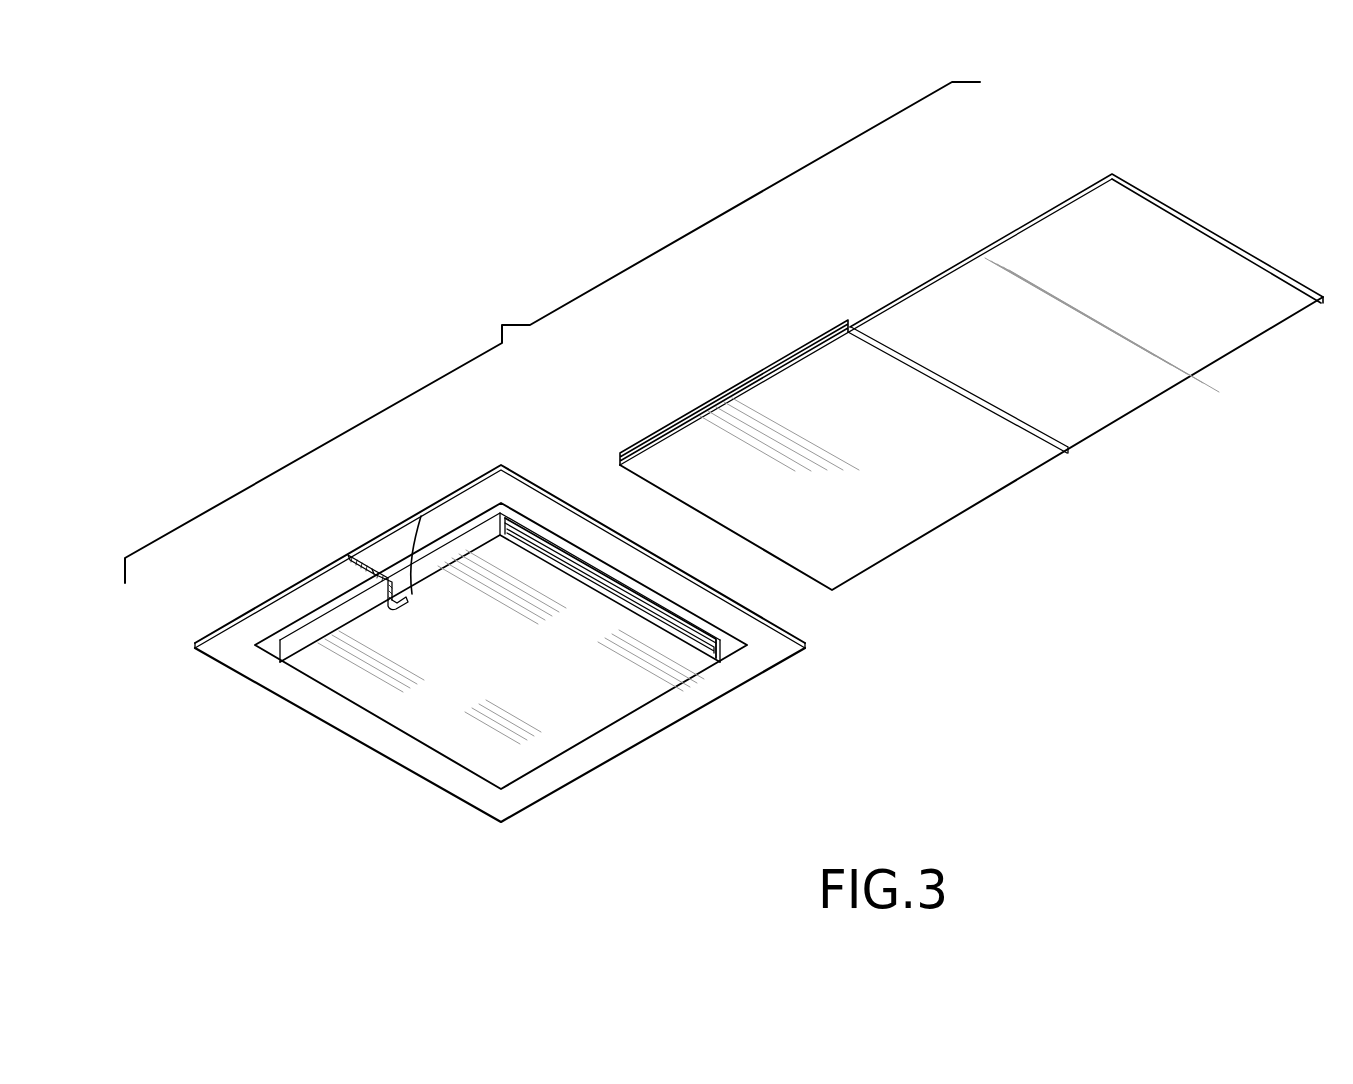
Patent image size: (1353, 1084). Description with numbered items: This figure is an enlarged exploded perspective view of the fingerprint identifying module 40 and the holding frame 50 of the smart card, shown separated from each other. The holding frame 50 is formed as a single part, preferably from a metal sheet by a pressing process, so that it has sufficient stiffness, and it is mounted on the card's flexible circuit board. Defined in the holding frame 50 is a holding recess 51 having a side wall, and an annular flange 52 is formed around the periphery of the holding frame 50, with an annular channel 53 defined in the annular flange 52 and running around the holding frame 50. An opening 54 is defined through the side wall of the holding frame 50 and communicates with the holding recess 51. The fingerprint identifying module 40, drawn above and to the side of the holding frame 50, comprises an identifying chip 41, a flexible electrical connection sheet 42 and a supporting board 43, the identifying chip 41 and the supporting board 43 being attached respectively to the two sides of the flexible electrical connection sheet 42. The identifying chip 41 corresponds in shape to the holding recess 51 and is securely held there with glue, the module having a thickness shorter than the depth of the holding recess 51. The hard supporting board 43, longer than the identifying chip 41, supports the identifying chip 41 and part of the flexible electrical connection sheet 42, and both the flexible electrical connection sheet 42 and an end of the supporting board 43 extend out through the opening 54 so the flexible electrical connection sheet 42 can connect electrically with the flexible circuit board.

The fingerprint identifying module 40 is at (967, 382).
The identifying chip 41 is at (818, 343).
The flexible electrical connection sheet 42 is at (978, 252).
The supporting board 43 is at (967, 477).
The holding frame 50 is at (500, 624).
The holding recess 51 is at (410, 598).
The annular flange 52 is at (391, 571).
The annular channel 53 is at (352, 553).
The opening 54 is at (520, 540).